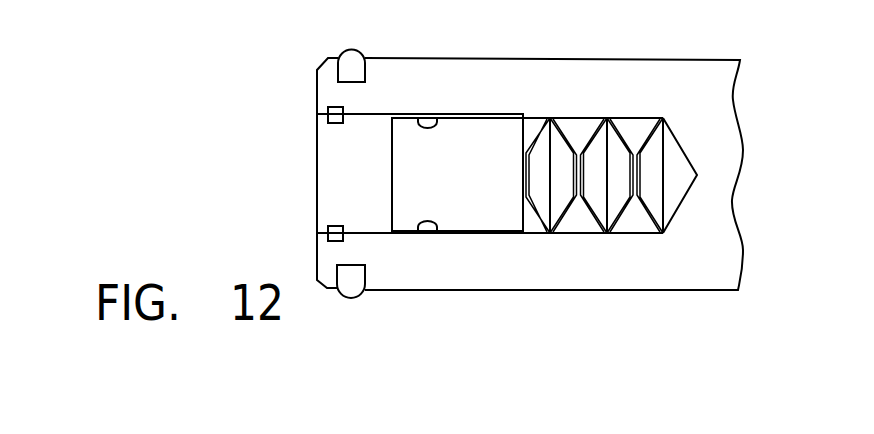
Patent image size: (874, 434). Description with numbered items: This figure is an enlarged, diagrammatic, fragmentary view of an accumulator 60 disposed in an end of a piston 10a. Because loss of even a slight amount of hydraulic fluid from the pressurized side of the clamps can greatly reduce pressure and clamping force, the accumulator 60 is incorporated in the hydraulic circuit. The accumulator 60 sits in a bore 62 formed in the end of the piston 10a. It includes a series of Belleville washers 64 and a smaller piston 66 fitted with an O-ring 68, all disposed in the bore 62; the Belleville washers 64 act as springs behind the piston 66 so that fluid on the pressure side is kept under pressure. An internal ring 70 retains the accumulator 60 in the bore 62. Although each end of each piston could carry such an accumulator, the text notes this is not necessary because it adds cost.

The piston 10a is at (717, 113).
The accumulator 60 is at (297, 208).
The bore 62 is at (366, 115).
The Belleville washers 64 is at (535, 115).
The piston 66 is at (457, 174).
The O-ring 68 is at (423, 127).
The internal ring 70 is at (330, 124).